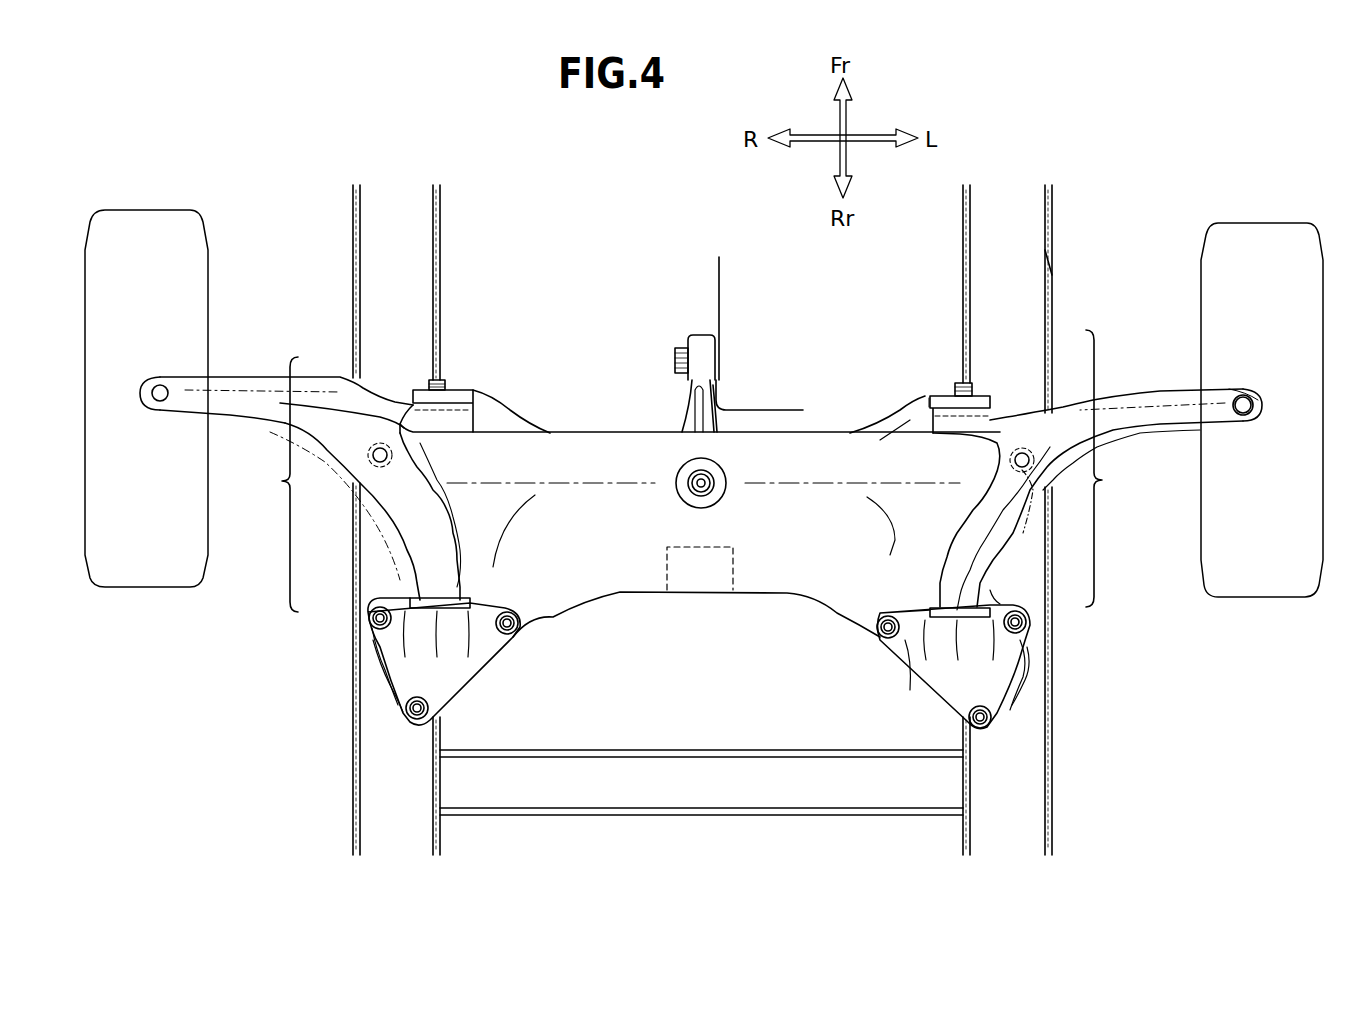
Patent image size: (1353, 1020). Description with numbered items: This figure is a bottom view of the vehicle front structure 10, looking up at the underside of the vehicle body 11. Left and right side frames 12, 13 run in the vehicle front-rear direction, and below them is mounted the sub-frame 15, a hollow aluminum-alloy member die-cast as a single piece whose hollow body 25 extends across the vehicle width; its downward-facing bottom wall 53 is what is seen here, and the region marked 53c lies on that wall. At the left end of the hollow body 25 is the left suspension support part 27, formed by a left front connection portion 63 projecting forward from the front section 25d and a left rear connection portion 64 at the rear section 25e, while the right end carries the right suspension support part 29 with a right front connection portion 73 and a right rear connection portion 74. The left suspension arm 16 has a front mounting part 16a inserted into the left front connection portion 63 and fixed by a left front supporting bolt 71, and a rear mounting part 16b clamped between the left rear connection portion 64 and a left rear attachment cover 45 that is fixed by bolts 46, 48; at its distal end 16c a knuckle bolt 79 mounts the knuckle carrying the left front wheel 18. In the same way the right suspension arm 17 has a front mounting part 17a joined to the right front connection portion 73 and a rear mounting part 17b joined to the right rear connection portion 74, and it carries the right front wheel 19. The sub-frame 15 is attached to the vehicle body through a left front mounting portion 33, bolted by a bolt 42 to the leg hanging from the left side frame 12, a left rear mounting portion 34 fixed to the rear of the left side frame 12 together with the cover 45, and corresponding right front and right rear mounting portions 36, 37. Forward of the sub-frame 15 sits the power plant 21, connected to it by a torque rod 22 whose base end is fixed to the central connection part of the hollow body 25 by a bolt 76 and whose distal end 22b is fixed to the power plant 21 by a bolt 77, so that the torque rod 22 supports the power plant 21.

The vehicle front structure 10 is at (446, 126).
The vehicle body 11 is at (1050, 262).
The left side frame 12 is at (1040, 205).
The right side frame 13 is at (365, 212).
The sub-frame 15 is at (589, 425).
The left suspension arm 16 is at (1160, 390).
The front mounting part 16a is at (957, 450).
The rear mounting part 16b is at (959, 650).
The distal end 16c is at (1229, 421).
The right suspension arm 17 is at (257, 377).
The front mounting part 17a is at (447, 392).
The rear mounting part 17b is at (437, 642).
The left front wheel 18 is at (1213, 235).
The right front wheel 19 is at (195, 218).
The power plant 21 is at (717, 283).
The torque rod 22 is at (687, 407).
The distal end 22b is at (712, 357).
The hollow body 25 is at (816, 442).
The front section 25d is at (945, 450).
The rear section 25e is at (910, 672).
The left suspension support part 27 is at (1110, 468).
The right suspension support part 29 is at (272, 484).
The left front mounting portion 33 is at (1026, 519).
The left rear mounting portion 34 is at (1030, 655).
The right front mounting portion 36 is at (387, 467).
The right rear mounting portion 37 is at (375, 643).
The bolt 42 is at (1022, 448).
The left rear attachment cover 45 is at (408, 685).
The bolt 46 is at (1030, 625).
The bolt 48 is at (882, 640).
The bottom wall 53 is at (660, 560).
The curved portion of rear cross member 53c is at (937, 537).
The left front connection portion 63 is at (993, 400).
The left rear connection portion 64 is at (990, 590).
The left front supporting bolt 71 is at (975, 393).
The right front connection portion 73 is at (413, 390).
The right rear connection portion 74 is at (369, 600).
The bolt 76 is at (690, 492).
The bolt 77 is at (675, 360).
The knuckle bolt 79 is at (1250, 395).